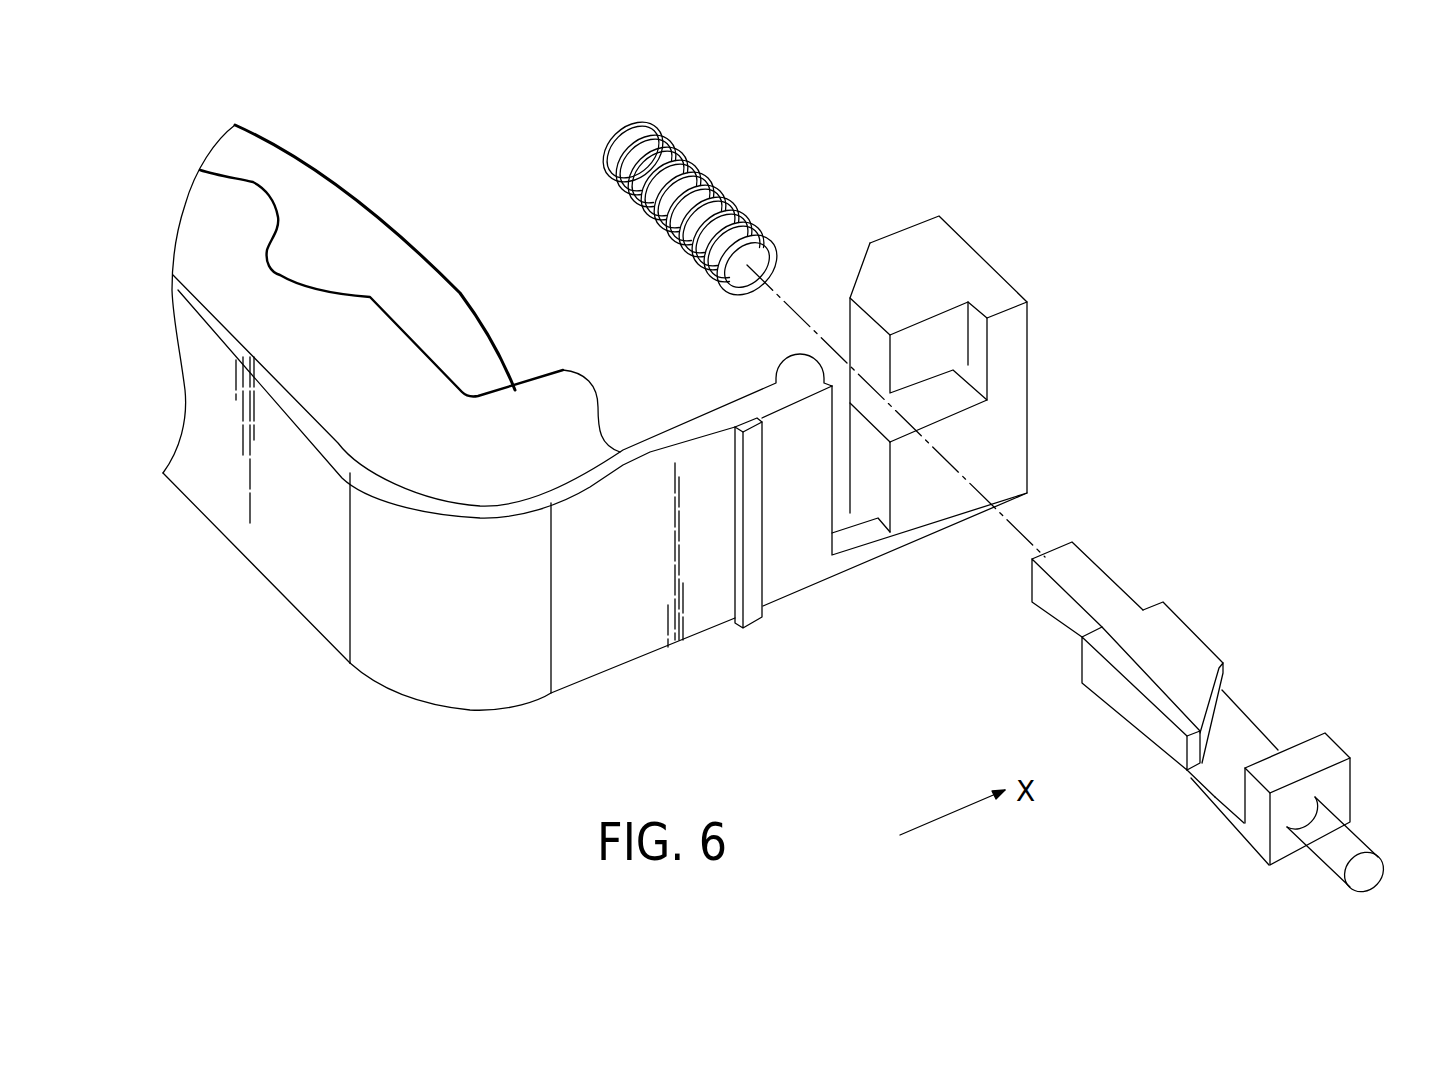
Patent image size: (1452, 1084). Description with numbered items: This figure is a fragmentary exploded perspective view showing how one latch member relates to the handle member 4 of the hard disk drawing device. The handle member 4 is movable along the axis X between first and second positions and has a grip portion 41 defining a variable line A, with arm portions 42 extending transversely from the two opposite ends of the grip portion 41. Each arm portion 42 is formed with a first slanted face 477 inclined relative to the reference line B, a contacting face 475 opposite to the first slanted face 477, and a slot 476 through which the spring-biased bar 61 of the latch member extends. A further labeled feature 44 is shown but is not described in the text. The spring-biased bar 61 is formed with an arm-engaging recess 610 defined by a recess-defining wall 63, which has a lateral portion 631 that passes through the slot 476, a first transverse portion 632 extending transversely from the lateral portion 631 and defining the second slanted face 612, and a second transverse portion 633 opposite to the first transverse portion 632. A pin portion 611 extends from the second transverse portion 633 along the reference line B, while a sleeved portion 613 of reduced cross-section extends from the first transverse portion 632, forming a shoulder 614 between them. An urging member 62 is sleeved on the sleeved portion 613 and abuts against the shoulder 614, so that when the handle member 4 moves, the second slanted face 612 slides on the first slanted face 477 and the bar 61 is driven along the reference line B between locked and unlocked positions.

The handle member 4 is at (240, 565).
The grip portion 41 is at (195, 473).
The arm portions 42 is at (633, 660).
The rib 44 is at (758, 613).
The contacting face 475 is at (987, 360).
The slot 476 is at (942, 395).
The first slanted face 477 is at (852, 282).
The spring-biased bar 61 is at (1085, 700).
The arm-engaging recess 610 is at (1197, 783).
The pin portion 611 is at (1358, 850).
The second slanted face 612 is at (1220, 700).
The sleeved portion 613 is at (1090, 567).
The shoulder 614 is at (1100, 628).
The urging member 62 is at (687, 155).
The recess-defining wall 63 is at (1250, 720).
The lateral portion 631 is at (1223, 817).
The first transverse portion 632 is at (1152, 603).
The second transverse portion 633 is at (1313, 760).